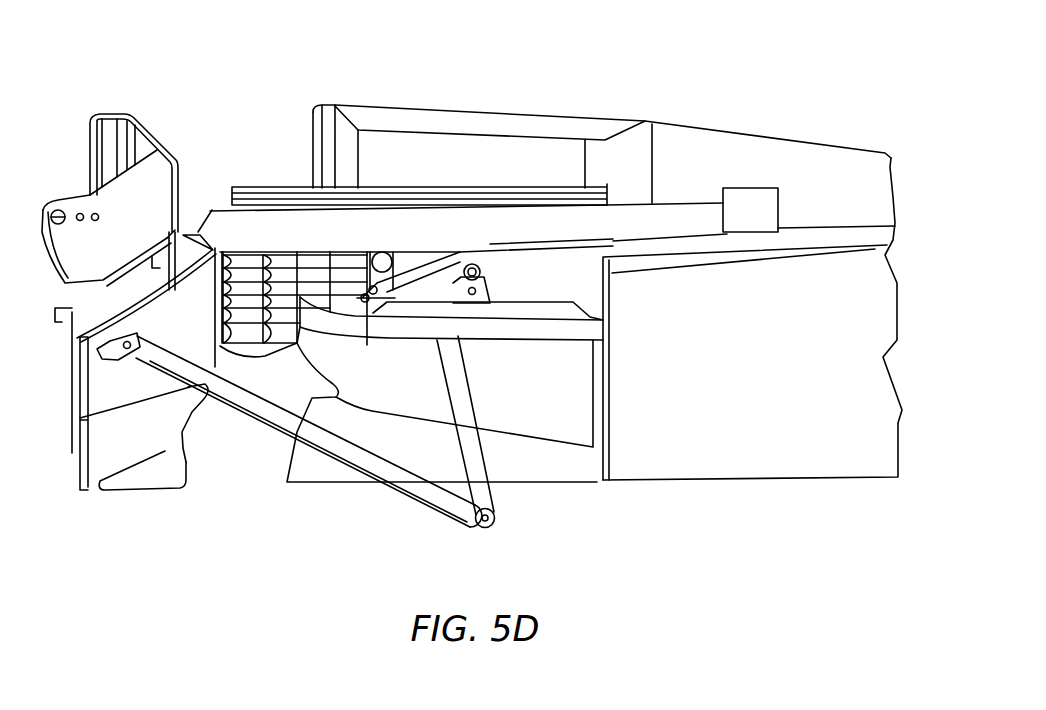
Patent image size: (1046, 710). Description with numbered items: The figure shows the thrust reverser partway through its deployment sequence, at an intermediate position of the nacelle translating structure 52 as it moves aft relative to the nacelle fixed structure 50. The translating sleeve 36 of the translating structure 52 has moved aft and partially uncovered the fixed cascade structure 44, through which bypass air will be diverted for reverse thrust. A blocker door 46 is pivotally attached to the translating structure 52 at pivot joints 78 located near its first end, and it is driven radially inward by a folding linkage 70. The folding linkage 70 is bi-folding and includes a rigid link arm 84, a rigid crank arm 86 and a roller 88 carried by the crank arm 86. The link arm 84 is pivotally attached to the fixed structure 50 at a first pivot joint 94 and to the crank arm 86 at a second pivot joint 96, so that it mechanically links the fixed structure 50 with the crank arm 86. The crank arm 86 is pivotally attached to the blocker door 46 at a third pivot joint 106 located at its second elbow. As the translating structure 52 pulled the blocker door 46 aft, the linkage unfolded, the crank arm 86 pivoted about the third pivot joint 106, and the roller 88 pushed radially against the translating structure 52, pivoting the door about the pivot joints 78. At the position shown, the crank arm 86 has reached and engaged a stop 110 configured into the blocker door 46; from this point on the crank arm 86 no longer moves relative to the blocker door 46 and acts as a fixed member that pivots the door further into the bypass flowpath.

The translating sleeve 36 is at (607, 250).
The nacelle translating structure 52 is at (602, 112).
The fixed cascade structure 44 is at (367, 186).
The nacelle fixed structure 50 is at (161, 130).
The blocker door 46 is at (216, 352).
The first pivot joint 94 is at (97, 349).
The link arm 84 is at (402, 496).
The crank arm 86 is at (489, 496).
The second pivot joint 96 is at (469, 522).
The stop 110 is at (320, 405).
The folding linkage 70 is at (352, 486).
The pivot joints 78 is at (365, 292).
The roller 88 is at (476, 263).
The third pivot joint 106 is at (478, 288).